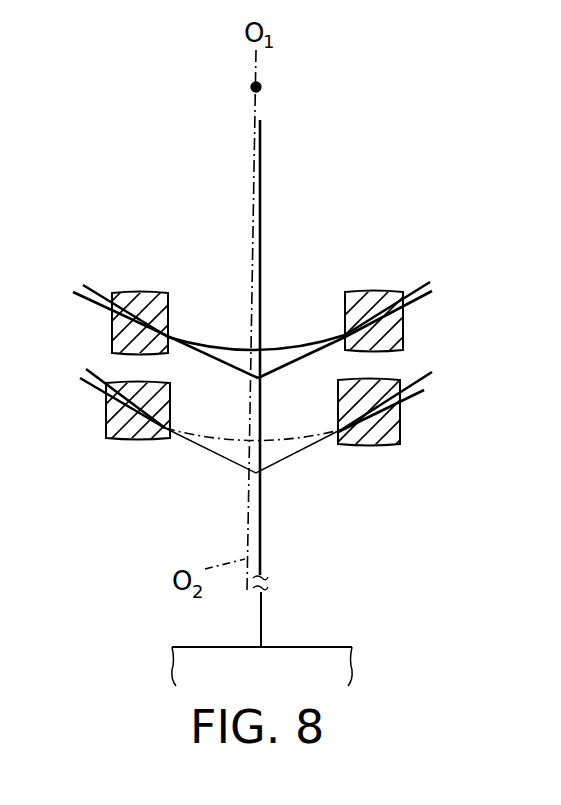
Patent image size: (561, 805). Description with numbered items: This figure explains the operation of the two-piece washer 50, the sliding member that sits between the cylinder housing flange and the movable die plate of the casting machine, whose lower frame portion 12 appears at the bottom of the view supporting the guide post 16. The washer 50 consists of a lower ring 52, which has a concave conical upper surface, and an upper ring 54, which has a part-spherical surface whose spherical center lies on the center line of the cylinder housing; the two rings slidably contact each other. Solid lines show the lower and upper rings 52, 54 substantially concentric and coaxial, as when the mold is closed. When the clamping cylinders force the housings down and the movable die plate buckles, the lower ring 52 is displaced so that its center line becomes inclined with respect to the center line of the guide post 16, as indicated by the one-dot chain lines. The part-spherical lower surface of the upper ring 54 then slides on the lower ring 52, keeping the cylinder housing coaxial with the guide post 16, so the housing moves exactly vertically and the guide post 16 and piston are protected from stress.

The base 12 is at (316, 652).
The guide post 16 is at (264, 541).
The two-piece washer 50 is at (98, 280).
The lower ring 52 is at (400, 326).
The upper ring 54 is at (368, 298).